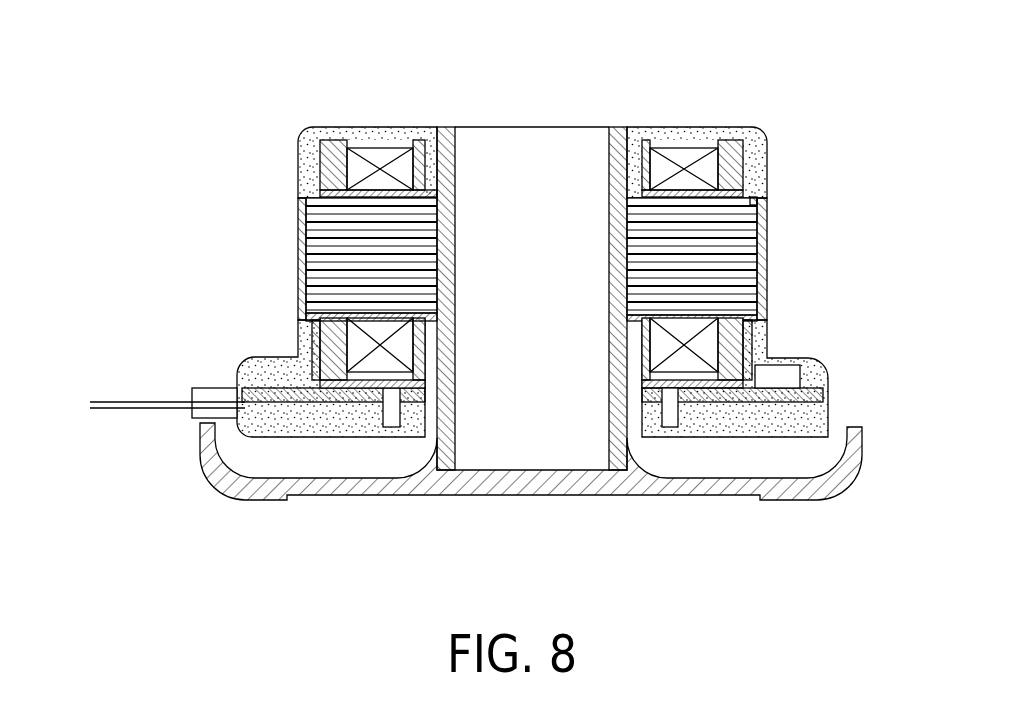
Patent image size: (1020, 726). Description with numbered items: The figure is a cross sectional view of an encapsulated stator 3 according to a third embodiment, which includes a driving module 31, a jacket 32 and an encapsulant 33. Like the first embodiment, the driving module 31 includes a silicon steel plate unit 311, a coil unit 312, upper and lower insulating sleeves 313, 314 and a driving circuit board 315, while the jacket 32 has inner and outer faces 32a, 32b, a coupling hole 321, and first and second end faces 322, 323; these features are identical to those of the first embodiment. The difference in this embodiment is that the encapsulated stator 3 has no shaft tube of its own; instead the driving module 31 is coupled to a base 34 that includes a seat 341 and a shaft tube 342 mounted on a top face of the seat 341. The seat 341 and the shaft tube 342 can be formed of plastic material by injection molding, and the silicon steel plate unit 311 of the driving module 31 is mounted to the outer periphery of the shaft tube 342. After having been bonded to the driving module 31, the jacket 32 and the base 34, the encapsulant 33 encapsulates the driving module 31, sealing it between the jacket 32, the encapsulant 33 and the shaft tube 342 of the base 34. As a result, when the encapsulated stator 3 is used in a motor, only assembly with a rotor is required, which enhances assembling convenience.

The encapsulated stator 3 is at (501, 331).
The driving module 31 is at (770, 228).
The silicon steel plate unit 311 is at (735, 250).
The coil unit 312 is at (705, 140).
The upper insulating sleeve 313 is at (735, 165).
The lower insulating sleeve 314 is at (753, 342).
The driving circuit board 315 is at (822, 395).
The jacket 32 is at (302, 286).
The inner face 32a is at (312, 232).
The outer face 32b is at (298, 252).
The coupling hole 321 is at (310, 184).
The first end face 322 is at (298, 182).
The second end face 323 is at (298, 333).
The encapsulant 33 is at (368, 127).
The base 34 is at (531, 382).
The seat 341 is at (628, 482).
The shaft tube 342 is at (457, 313).